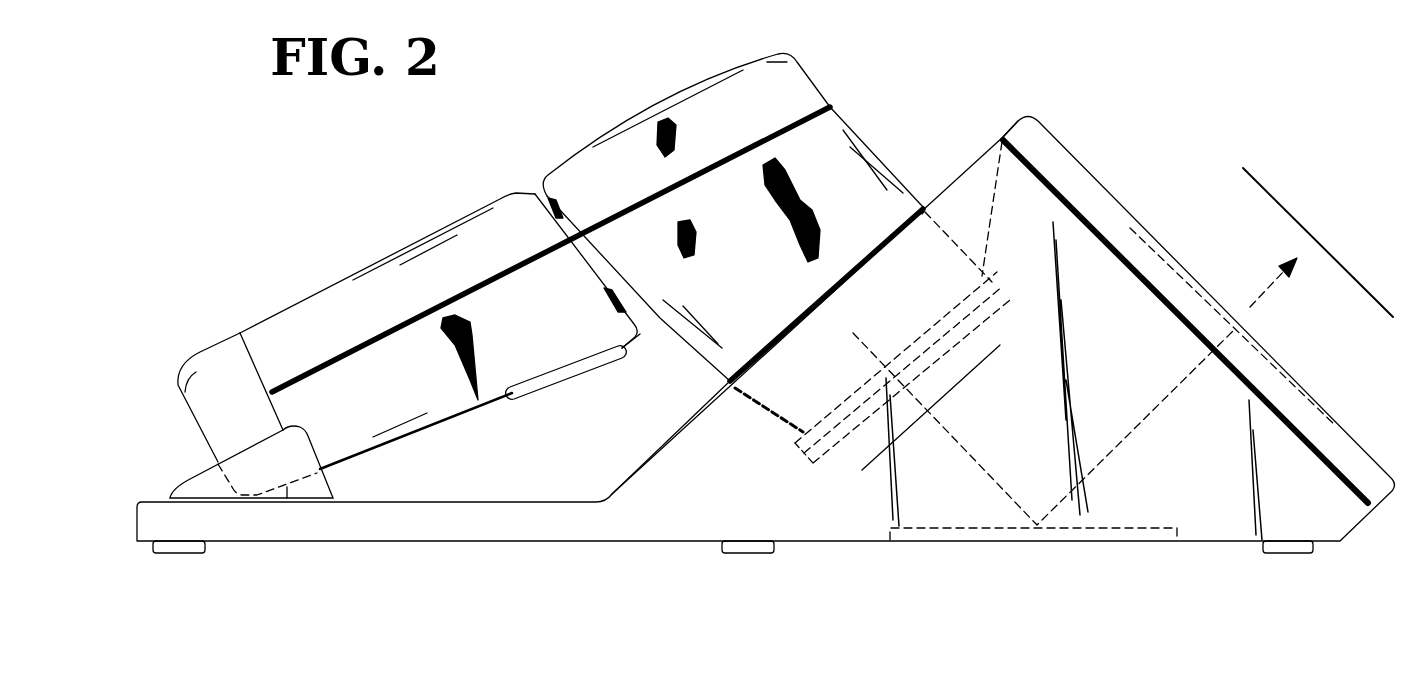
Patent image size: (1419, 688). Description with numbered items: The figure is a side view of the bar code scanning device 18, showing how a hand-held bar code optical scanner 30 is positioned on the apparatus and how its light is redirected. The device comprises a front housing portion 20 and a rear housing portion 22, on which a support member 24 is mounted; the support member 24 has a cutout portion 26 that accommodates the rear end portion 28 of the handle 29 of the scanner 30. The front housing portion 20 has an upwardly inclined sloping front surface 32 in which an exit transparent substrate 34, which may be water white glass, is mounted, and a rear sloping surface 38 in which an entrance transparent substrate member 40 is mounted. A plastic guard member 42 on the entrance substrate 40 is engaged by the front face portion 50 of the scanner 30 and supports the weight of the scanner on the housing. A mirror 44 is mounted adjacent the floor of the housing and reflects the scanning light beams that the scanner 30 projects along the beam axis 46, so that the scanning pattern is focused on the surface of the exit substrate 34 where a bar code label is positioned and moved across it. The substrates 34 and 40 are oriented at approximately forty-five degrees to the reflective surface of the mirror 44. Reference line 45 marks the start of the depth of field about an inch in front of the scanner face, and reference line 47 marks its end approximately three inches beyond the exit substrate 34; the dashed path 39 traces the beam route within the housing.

The bar code scanning device 18 is at (785, 608).
The front housing portion 20 is at (1210, 533).
The rear housing portion 22 is at (523, 539).
The support member 24 is at (333, 490).
The cutout portion 26 is at (287, 500).
The rear end portion 28 is at (192, 418).
The handle 29 is at (372, 282).
The hand-held bar code optical scanner 30 is at (652, 101).
The sloping front surface 32 is at (1120, 202).
The transparent substrate 34 is at (1190, 275).
The rear sloping surface 38 is at (1011, 118).
The light path 39 is at (960, 145).
The entrance transparent substrate member 40 is at (843, 440).
The plastic guard member 42 is at (987, 313).
The mirror 44 is at (950, 542).
The reference line 45 is at (980, 372).
The beam axis 46 is at (1248, 307).
The reference line 47 is at (1262, 187).
The front face portion 50 is at (640, 468).